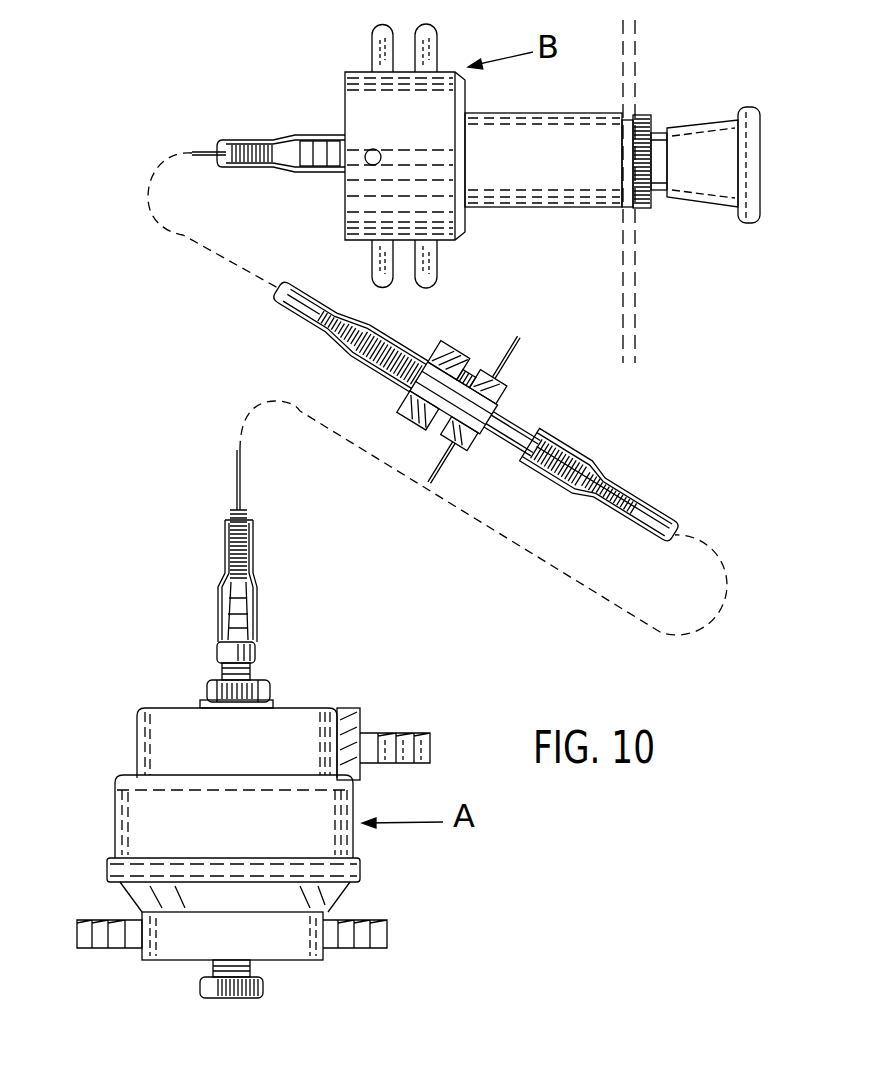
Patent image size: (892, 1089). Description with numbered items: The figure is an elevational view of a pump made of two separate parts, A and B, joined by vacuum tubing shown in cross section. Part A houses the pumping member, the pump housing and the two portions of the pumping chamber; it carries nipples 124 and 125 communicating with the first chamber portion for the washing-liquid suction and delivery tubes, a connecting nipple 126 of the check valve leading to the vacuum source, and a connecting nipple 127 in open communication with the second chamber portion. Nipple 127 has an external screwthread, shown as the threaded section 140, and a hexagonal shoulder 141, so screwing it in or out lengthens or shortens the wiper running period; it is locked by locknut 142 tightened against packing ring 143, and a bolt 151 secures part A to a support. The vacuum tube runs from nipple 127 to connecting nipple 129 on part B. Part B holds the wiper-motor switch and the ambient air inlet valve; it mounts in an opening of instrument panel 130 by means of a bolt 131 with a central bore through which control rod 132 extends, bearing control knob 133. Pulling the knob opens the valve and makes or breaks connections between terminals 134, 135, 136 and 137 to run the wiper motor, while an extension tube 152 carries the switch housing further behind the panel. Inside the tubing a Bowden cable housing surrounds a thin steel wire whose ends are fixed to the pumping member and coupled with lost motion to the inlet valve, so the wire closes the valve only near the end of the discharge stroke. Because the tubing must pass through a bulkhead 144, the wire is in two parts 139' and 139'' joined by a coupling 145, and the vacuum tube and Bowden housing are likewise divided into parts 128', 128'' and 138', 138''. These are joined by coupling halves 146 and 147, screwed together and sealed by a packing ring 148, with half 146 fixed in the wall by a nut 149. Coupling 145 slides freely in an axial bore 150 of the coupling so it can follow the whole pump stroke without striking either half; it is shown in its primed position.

The nipple 124 is at (368, 950).
The nipple 125 is at (100, 934).
The connecting nipple 126 is at (424, 742).
The connecting nipple 127 is at (230, 622).
The vacuum tube part 128' is at (602, 491).
The vacuum tube part 128'' is at (334, 333).
The connecting nipple 129 is at (312, 163).
The instrument panel 130 is at (627, 283).
The bolt 131 is at (645, 115).
The control rod 132 is at (656, 186).
The control knob 133 is at (700, 180).
The terminal 134 is at (374, 278).
The terminal 135 is at (424, 274).
The terminal 136 is at (381, 44).
The terminal 137 is at (428, 42).
The Bowden cable housing part 138' is at (589, 464).
The Bowden cable housing part 138'' is at (368, 359).
The steel wire part 139' is at (483, 518).
The steel wire part 139'' is at (213, 231).
The threaded neck 140 is at (252, 674).
The hexagonal shoulder 141 is at (257, 652).
The locknut 142 is at (210, 689).
The packing ring 143 is at (277, 705).
The bulkhead 144 is at (517, 348).
The coupling 145 is at (500, 388).
The coupling half 146 is at (470, 448).
The coupling half 147 is at (422, 428).
The packing ring 148 is at (435, 363).
The nut 149 is at (490, 365).
The axial bore 150 is at (513, 427).
The bolt 151 is at (264, 988).
The extension tube 152 is at (562, 135).